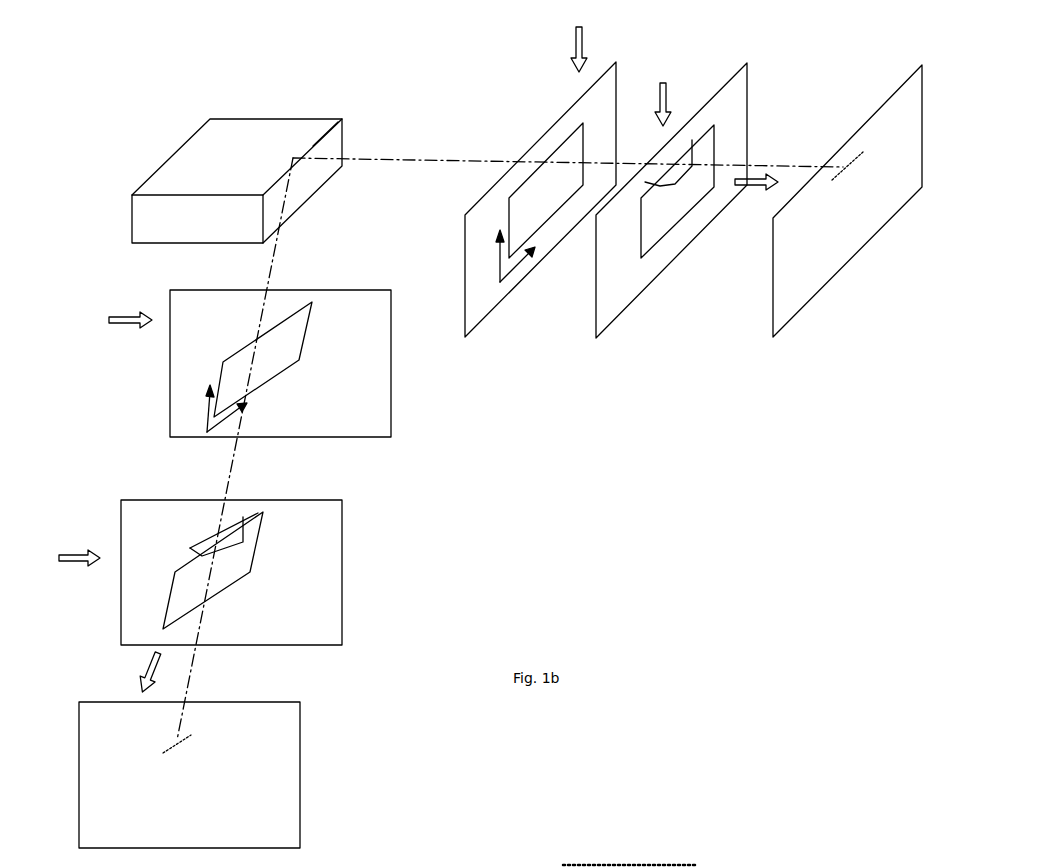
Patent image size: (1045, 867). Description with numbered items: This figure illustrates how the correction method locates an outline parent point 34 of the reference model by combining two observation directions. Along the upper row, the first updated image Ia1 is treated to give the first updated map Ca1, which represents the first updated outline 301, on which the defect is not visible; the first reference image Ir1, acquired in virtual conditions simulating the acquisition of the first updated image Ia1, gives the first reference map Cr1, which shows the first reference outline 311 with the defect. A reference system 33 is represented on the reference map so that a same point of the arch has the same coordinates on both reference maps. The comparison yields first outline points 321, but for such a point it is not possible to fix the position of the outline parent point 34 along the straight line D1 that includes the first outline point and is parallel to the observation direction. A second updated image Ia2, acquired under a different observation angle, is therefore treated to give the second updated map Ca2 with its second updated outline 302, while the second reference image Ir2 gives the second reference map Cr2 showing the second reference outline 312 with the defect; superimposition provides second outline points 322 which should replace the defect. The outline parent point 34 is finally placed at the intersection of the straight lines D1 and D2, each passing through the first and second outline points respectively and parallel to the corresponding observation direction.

The outline parent point 34 is at (293, 158).
The first updated outline 301 is at (558, 147).
The second updated outline 302 is at (230, 350).
The first reference outline 311 is at (699, 140).
The second reference outline 312 is at (247, 522).
The first outline points 321 is at (843, 170).
The second outline points 322 is at (177, 740).
The reference system 33 is at (515, 267).
The first updated map Ca1 is at (607, 92).
The second updated map Ca2 is at (377, 302).
The first reference map Cr1 is at (737, 93).
The second reference map Cr2 is at (328, 512).
The first updated image Ia1 is at (577, 40).
The second updated image Ia2 is at (113, 321).
The first reference image Ir1 is at (662, 94).
The second reference image Ir2 is at (62, 559).
The straight line Δ1 D1 is at (568, 151).
The straight line Δ2 D2 is at (239, 449).